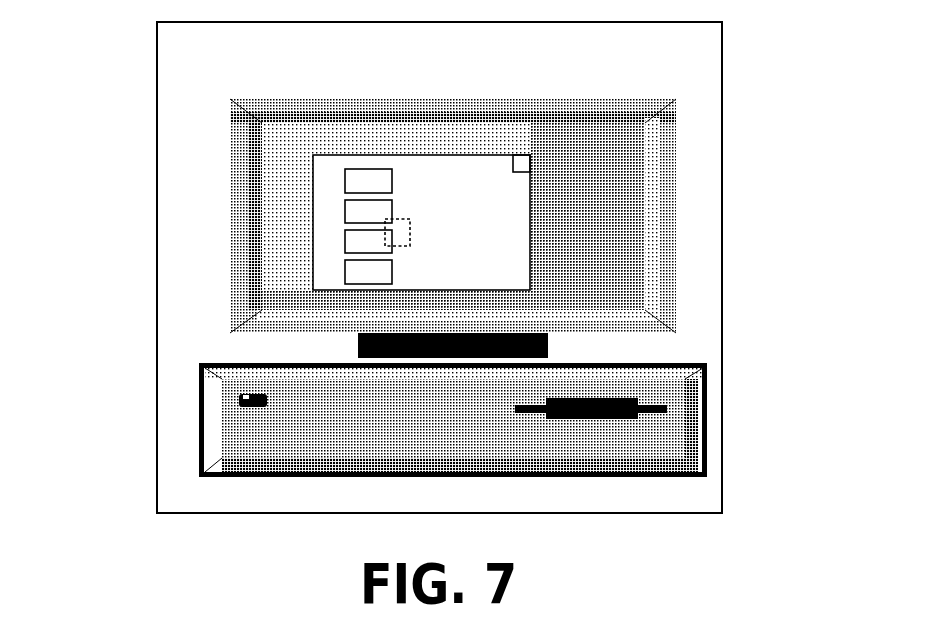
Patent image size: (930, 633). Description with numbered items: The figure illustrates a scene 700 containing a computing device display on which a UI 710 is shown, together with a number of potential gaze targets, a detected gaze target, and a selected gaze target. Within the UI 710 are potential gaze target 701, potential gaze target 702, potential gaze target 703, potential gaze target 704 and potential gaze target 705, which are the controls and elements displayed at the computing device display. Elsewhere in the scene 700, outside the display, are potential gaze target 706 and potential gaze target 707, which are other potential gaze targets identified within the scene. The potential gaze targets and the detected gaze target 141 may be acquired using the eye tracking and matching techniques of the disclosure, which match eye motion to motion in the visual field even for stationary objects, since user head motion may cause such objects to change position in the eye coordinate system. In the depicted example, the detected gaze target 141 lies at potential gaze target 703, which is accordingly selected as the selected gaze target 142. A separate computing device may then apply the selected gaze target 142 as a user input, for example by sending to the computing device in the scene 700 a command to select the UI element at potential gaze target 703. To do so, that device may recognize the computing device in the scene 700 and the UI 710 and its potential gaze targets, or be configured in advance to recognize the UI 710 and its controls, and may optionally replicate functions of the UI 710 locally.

The scene 700 is at (439, 267).
The UI 710 is at (421, 222).
The potential gaze target 701 is at (368, 181).
The potential gaze target 702 is at (368, 211).
The potential gaze target 703 is at (368, 241).
The potential gaze target 704 is at (368, 272).
The selected gaze target 142 is at (276, 149).
The detected gaze target 141 is at (412, 237).
The potential gaze target 705 is at (523, 163).
The potential gaze target 706 is at (246, 397).
The potential gaze target 707 is at (640, 402).